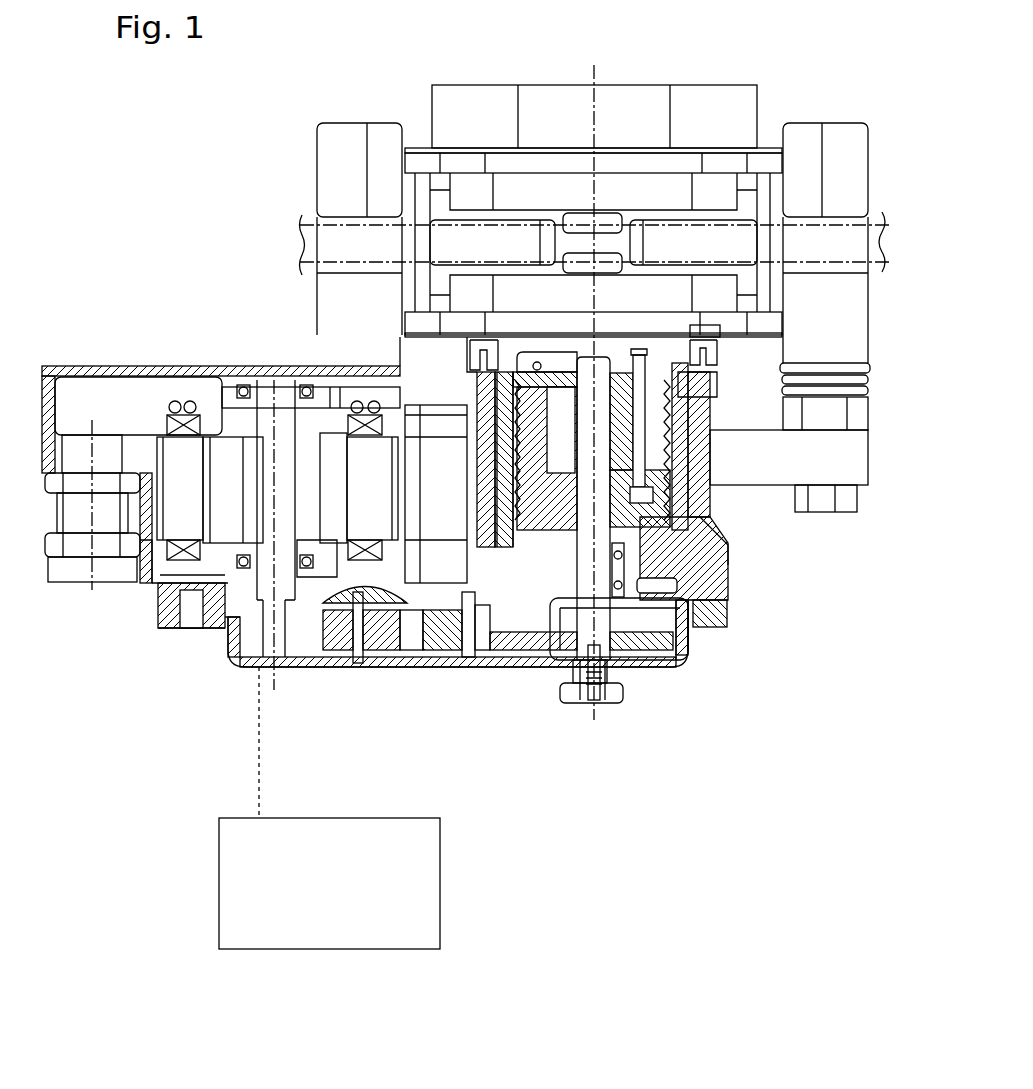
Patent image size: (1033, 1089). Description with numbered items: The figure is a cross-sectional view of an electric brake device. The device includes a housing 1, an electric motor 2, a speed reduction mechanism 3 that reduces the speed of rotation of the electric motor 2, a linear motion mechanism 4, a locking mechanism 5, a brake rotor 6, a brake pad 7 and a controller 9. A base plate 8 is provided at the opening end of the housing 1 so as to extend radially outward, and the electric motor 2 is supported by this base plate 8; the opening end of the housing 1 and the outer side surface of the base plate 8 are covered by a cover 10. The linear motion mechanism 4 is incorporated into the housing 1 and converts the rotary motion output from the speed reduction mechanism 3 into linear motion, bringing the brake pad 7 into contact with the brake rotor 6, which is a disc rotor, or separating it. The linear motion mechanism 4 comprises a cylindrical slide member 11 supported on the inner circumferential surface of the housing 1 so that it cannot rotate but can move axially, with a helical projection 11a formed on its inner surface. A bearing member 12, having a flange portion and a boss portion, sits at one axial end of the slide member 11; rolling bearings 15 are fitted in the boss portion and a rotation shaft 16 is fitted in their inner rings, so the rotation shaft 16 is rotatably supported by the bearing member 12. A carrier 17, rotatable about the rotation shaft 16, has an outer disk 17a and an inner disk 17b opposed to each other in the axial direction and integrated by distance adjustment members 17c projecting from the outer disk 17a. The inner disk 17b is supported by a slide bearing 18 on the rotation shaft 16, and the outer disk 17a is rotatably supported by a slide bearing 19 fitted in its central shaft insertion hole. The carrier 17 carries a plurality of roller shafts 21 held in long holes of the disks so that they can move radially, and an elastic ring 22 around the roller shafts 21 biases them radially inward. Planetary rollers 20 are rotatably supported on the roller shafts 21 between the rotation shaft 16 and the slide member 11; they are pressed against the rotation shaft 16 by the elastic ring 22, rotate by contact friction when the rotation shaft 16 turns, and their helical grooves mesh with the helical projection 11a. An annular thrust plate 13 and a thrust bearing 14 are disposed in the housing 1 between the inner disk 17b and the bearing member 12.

The housing 1 is at (710, 565).
The electric motor 2 is at (207, 400).
The speed reduction mechanism 3 is at (493, 663).
The linear motion mechanism 4 is at (660, 615).
The locking mechanism 5 is at (403, 637).
The brake rotor 6 is at (876, 268).
The brake pad 7 is at (712, 292).
The base plate 8 is at (160, 597).
The controller 9 is at (218, 843).
The cover 10 is at (632, 670).
The slide member 11 is at (678, 428).
The helical projection 11a is at (830, 472).
The bearing member 12 is at (680, 580).
The annular thrust plate 13 is at (655, 515).
The thrust bearing 14 is at (728, 537).
The rolling bearings 15 is at (683, 590).
The rotation shaft 16 is at (717, 362).
The carrier 17 is at (470, 375).
The outer disk 17a is at (557, 375).
The inner disk 17b is at (552, 670).
The distance adjustment member 17c is at (445, 412).
The slide bearing 18 is at (670, 463).
The slide bearing 19 is at (695, 335).
The planetary rollers 20 is at (600, 703).
The roller shafts 21 is at (680, 397).
The elastic ring 22 is at (537, 362).